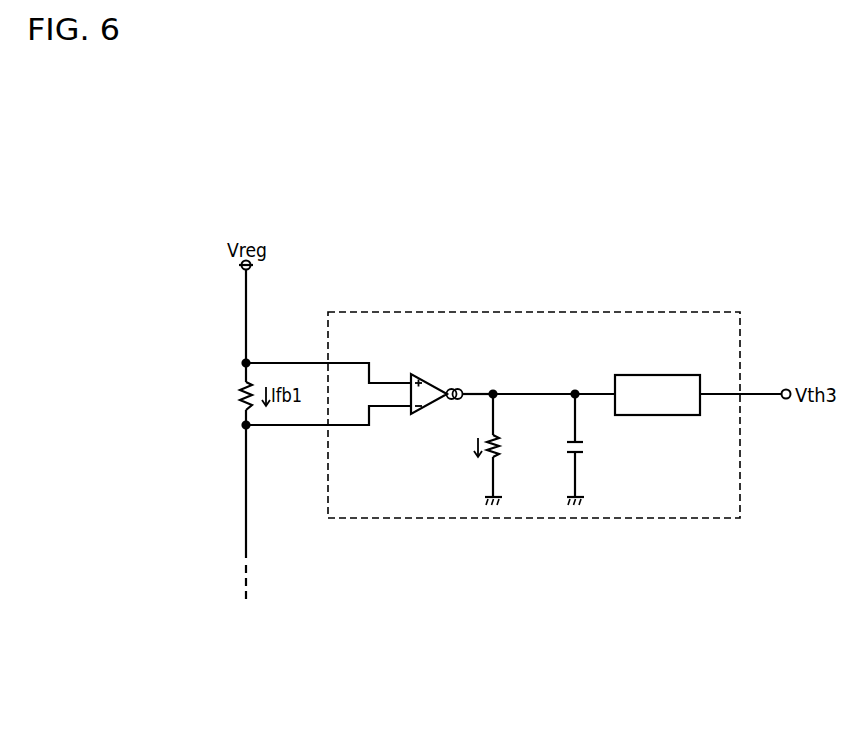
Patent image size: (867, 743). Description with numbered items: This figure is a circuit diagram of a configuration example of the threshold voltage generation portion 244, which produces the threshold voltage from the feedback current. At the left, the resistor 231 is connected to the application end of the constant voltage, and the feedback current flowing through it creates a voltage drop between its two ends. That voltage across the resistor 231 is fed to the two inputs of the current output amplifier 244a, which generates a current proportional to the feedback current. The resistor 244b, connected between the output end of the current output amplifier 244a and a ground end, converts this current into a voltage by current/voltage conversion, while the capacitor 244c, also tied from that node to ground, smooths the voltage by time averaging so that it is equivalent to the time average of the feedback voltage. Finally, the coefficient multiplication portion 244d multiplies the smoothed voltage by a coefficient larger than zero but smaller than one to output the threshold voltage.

The resistor 231 is at (223, 394).
The threshold voltage generation portion 244 is at (537, 311).
The current output amplifier 244a is at (433, 381).
The resistor 244b is at (522, 449).
The capacitor 244c is at (603, 449).
The coefficient multiplication portion 244d is at (661, 374).